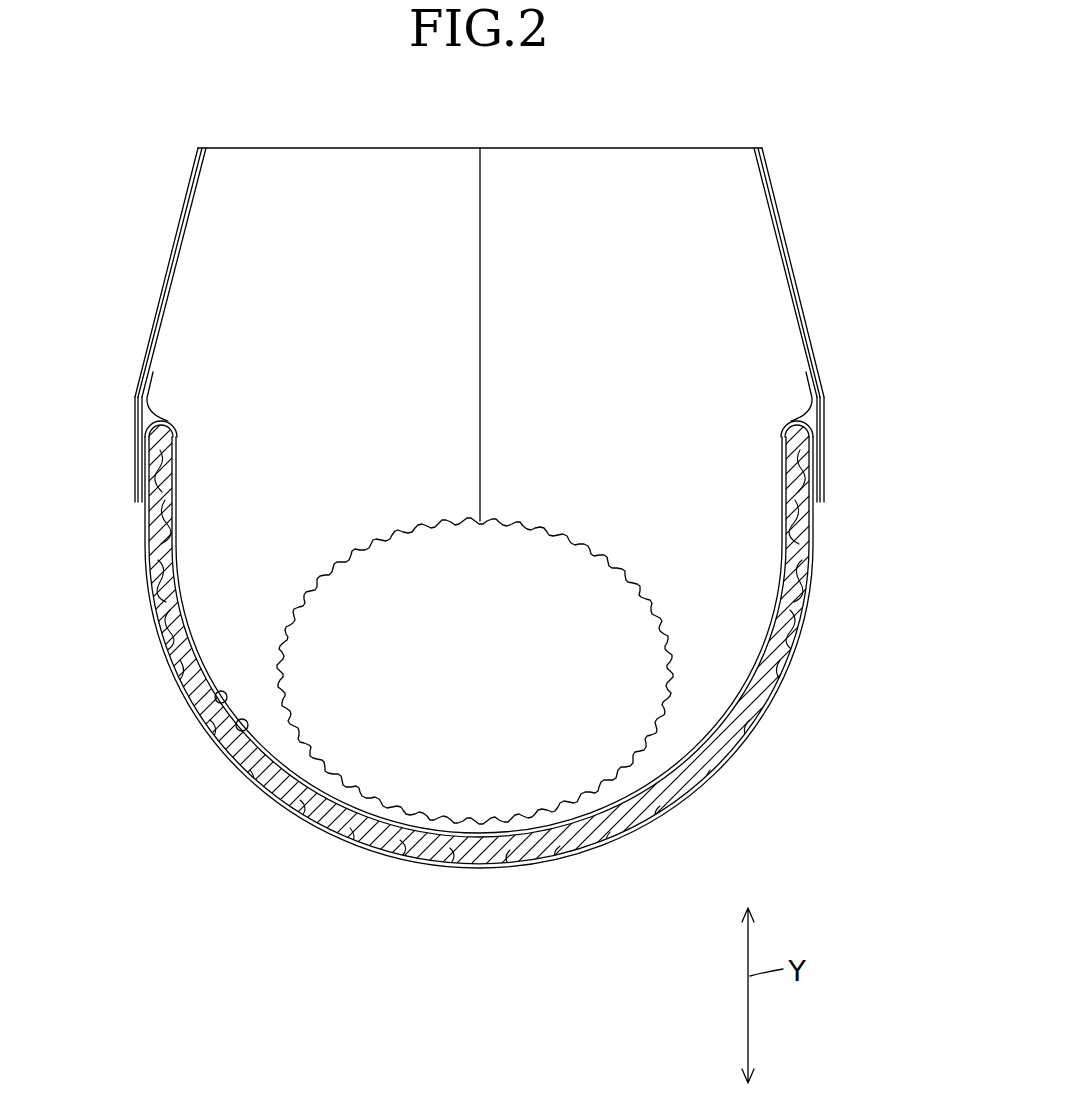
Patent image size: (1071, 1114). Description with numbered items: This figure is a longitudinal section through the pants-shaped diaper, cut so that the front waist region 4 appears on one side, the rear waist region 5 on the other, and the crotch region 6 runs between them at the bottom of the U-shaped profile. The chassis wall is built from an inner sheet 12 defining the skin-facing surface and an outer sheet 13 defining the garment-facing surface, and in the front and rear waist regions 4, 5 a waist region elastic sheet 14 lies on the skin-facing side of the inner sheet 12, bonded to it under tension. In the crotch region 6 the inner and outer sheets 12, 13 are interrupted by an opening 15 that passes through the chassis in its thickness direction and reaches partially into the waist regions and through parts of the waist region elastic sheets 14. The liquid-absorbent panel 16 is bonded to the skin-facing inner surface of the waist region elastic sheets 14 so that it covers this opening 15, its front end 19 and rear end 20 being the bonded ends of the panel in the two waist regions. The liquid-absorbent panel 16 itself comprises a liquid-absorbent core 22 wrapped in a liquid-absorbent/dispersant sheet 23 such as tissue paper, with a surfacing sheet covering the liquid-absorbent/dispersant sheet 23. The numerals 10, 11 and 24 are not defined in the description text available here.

The front waist region 4 is at (128, 296).
The rear waist region 5 is at (831, 299).
The crotch region 6 is at (498, 896).
The waist opening / top edge 10 is at (418, 148).
The leg (wearer's body) 11 is at (460, 702).
The inner sheet 12 is at (176, 246).
The outer sheet 13 is at (181, 218).
The waist region elastic sheets 14 is at (196, 180).
The opening 15 is at (146, 512).
The liquid-absorbent panel 16 is at (535, 650).
The front end 19 is at (153, 389).
The rear end 20 is at (806, 389).
The liquid-absorbent core 22 is at (256, 775).
The liquid-absorbent/dispersant sheet 23 is at (218, 740).
The absorbent core bumps 24 is at (201, 731).